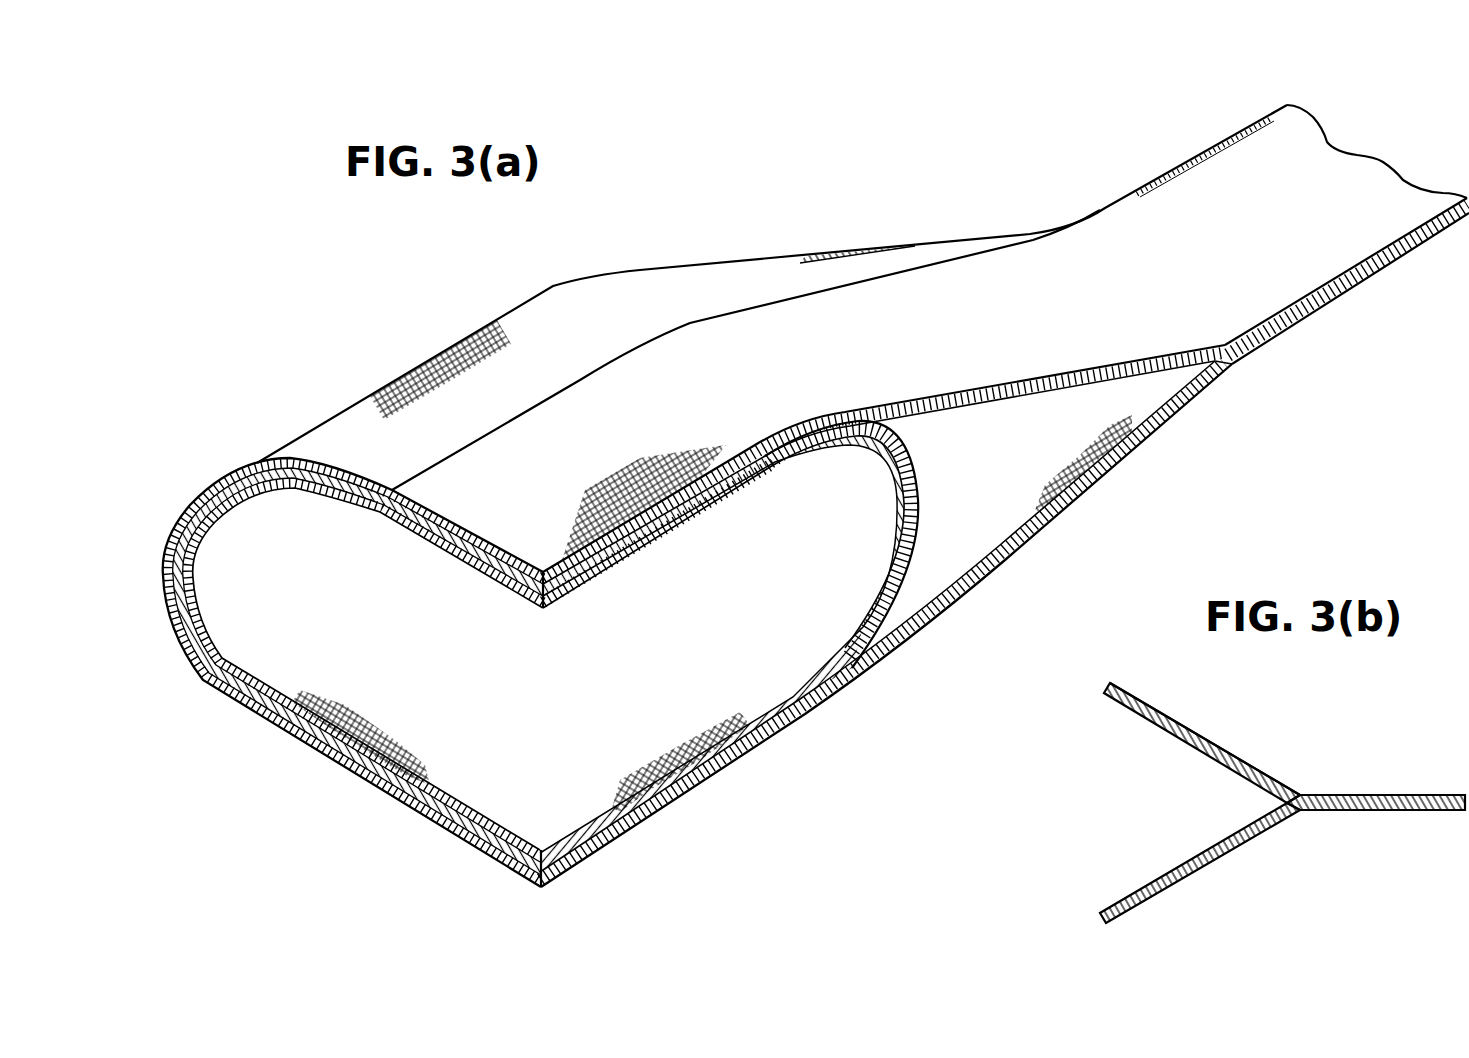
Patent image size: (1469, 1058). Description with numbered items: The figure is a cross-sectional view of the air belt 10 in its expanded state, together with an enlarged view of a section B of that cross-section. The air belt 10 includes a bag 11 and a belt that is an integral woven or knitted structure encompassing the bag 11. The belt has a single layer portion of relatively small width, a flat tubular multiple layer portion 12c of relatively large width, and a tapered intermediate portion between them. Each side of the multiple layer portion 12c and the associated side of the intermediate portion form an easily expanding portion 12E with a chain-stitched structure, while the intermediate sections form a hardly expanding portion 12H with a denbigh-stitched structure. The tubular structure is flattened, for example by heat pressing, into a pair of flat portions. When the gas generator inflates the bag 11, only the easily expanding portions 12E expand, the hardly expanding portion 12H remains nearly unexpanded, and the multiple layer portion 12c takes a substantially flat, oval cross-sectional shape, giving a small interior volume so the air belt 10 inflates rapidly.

The air belt 10 is at (842, 238).
The bag 11 is at (697, 783).
The multiple layer portion 12c is at (425, 398).
The easily expanding portion 12E is at (367, 445).
The hardly expanding portion 12H is at (518, 528).
The section B is at (1233, 379).